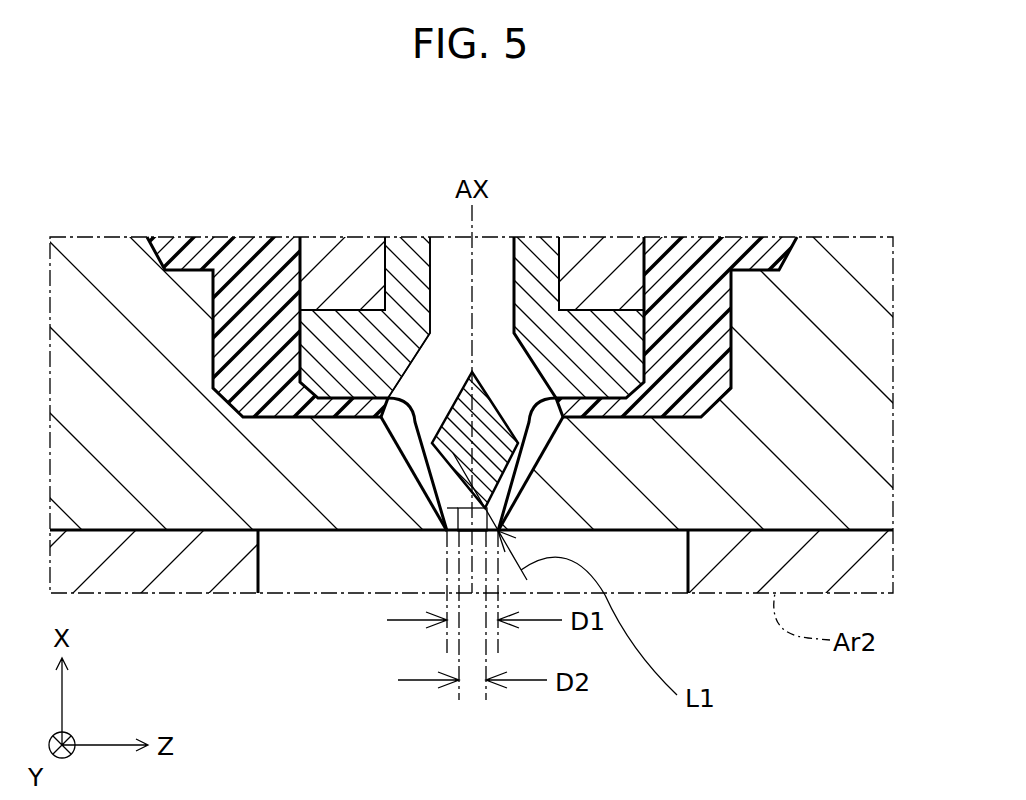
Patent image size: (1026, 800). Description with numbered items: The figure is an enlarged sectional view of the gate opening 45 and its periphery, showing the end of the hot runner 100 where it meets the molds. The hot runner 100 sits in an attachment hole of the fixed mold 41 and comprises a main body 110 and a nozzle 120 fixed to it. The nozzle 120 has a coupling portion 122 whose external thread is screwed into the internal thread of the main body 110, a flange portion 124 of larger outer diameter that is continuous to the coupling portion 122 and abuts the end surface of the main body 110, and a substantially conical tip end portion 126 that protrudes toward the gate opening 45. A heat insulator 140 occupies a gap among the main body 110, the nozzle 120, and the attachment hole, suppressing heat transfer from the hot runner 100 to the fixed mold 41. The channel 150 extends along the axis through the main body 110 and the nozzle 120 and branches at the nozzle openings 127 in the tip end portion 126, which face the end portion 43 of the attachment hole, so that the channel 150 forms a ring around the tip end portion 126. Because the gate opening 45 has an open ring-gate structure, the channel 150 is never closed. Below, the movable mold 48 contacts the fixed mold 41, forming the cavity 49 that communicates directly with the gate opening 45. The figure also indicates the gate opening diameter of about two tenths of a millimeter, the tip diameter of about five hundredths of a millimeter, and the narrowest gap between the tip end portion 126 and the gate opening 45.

The hot runner 100 is at (834, 199).
The main body 110 is at (360, 278).
The nozzle 120 is at (659, 218).
The coupling portion 122 is at (540, 270).
The flange portion 124 is at (605, 330).
The tip end portion 126 is at (424, 450).
The nozzle opening 127 is at (412, 398).
The heat insulator 140 is at (253, 278).
The channel 150 is at (455, 282).
The fixed mold 41 is at (108, 467).
The end portion 43 is at (545, 420).
The gate opening 45 is at (447, 531).
The movable mold 48 is at (108, 573).
The cavity 49 is at (645, 573).